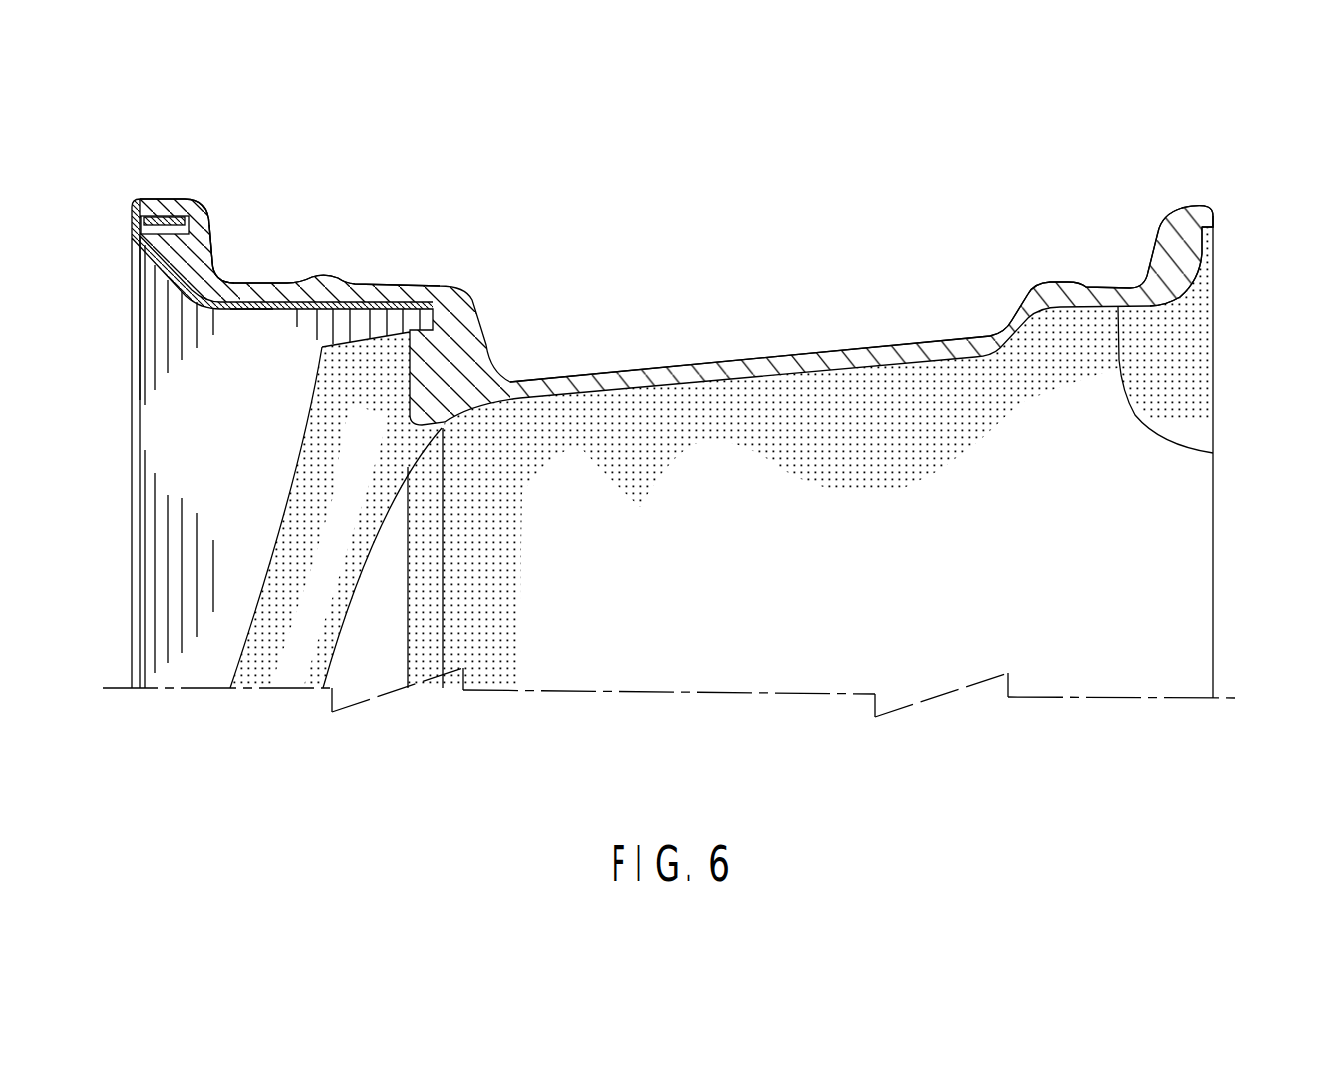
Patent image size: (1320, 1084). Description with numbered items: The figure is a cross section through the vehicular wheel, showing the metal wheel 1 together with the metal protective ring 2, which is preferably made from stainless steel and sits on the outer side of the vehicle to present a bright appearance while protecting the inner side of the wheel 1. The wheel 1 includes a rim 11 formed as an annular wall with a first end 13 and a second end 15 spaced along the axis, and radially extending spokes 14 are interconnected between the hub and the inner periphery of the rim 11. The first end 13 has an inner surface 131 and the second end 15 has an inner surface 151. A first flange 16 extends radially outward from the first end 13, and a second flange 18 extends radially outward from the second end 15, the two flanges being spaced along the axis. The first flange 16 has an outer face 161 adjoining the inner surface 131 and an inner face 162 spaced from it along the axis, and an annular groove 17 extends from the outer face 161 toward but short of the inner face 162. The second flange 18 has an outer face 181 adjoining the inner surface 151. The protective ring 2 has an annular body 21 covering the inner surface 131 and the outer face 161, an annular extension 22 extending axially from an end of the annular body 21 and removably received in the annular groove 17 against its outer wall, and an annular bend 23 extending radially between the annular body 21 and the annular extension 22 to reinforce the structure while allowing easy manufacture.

The wheel 1 is at (437, 279).
The rim 11 is at (573, 378).
The first end 13 is at (307, 285).
The inner surface 131 is at (273, 309).
The spokes 14 is at (306, 648).
The second end 15 is at (1103, 285).
The inner surface 151 is at (1213, 453).
The first flange 16 is at (190, 210).
The outer face 161 is at (157, 278).
The inner face 162 is at (209, 232).
The annular groove 17 is at (195, 253).
The second flange 18 is at (1173, 237).
The outer face 181 is at (1193, 288).
The protective ring 2 is at (119, 545).
The annular body 21 is at (188, 303).
The annular extension 22 is at (176, 218).
The annular bend 23 is at (160, 213).